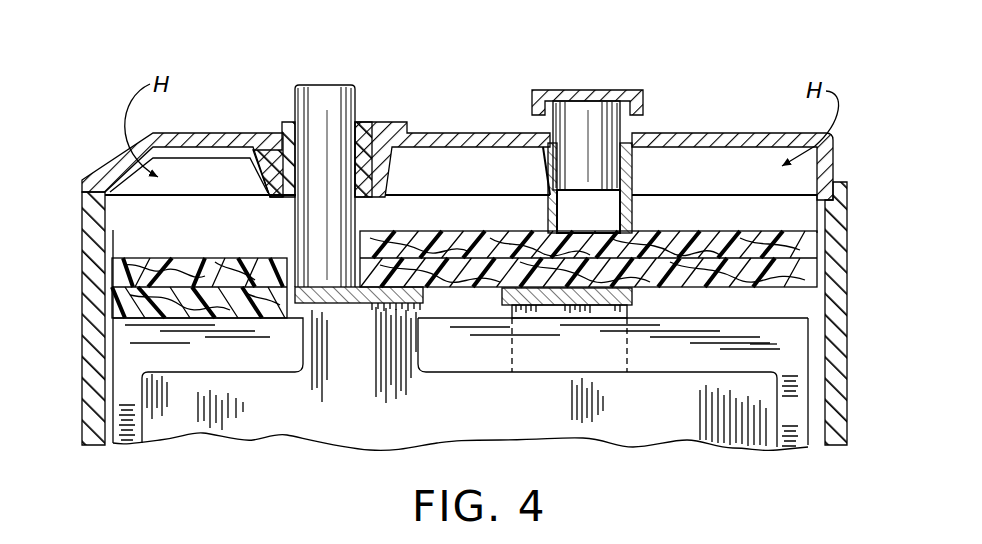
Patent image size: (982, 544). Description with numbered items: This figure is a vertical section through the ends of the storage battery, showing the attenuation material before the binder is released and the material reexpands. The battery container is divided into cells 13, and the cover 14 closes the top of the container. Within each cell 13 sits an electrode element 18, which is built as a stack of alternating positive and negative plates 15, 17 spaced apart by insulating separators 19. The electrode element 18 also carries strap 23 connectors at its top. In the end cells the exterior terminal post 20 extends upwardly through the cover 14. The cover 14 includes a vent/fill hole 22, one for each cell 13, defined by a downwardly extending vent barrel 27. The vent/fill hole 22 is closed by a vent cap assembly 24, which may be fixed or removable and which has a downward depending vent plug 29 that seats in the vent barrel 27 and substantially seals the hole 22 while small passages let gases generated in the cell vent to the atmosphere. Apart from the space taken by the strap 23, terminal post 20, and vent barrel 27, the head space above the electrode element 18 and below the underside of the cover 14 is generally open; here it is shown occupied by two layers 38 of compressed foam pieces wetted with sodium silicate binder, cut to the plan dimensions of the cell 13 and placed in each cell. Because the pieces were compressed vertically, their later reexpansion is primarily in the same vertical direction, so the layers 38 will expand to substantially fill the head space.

The cell 13 is at (122, 354).
The cover 14 is at (432, 133).
The positive plate 15 is at (765, 383).
The negative plate 17 is at (627, 312).
The electrode element 18 is at (543, 415).
The insulating separator 19 is at (460, 382).
The terminal post 20 is at (350, 86).
The vent/fill hole 22 is at (604, 206).
The strap 23 is at (358, 306).
The vent cap assembly 24 is at (581, 100).
The vent barrel 27 is at (618, 211).
The vent plug 29 is at (573, 112).
The layer of attenuation material pieces 38 is at (827, 263).